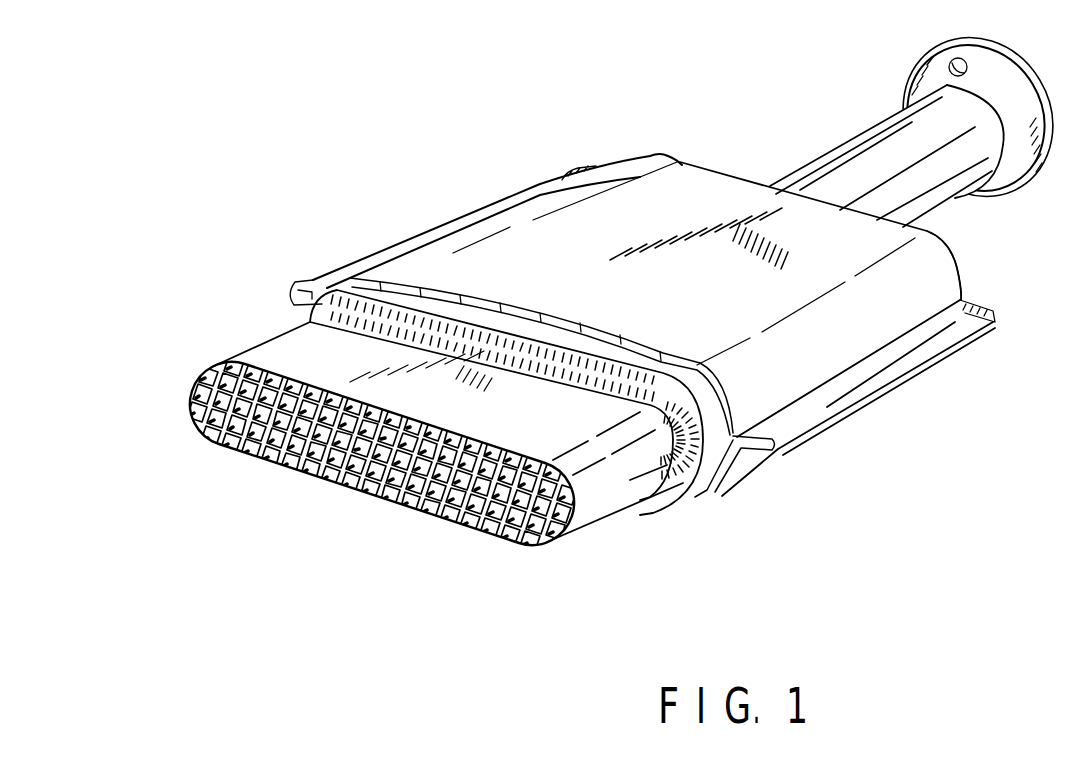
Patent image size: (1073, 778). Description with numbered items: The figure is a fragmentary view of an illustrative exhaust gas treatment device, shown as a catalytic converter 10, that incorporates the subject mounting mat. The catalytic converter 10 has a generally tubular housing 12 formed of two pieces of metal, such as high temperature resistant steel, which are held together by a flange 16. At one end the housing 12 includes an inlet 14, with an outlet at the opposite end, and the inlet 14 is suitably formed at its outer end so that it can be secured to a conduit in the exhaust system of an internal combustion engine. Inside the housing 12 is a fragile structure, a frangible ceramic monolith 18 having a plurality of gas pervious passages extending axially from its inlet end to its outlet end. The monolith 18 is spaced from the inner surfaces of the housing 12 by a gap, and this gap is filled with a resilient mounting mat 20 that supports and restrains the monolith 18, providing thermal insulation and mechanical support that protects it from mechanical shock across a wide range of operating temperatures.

The catalytic converter 10 is at (469, 211).
The housing 12 is at (948, 256).
The inlet 14 is at (838, 135).
The flange 16 is at (313, 280).
The ceramic monolith 18 is at (474, 530).
The mounting mat 20 is at (307, 323).